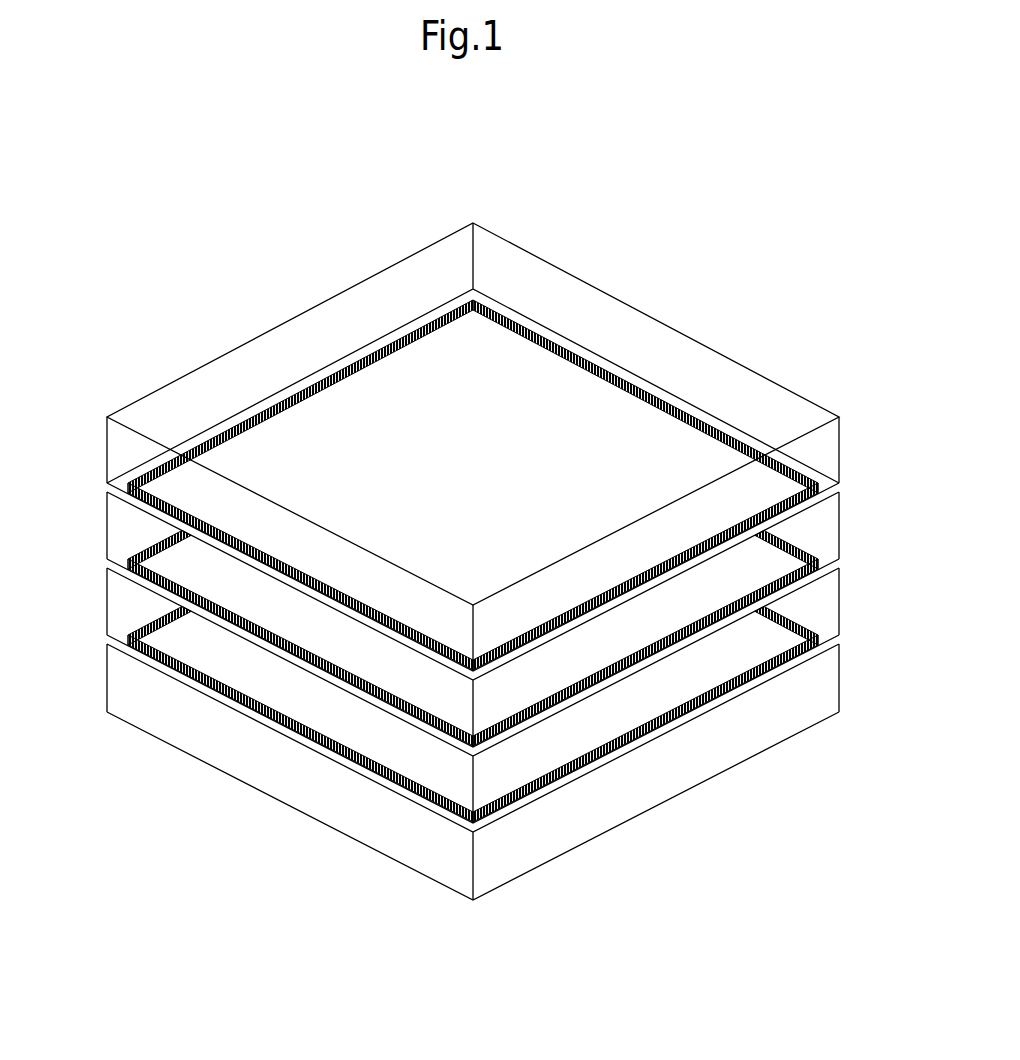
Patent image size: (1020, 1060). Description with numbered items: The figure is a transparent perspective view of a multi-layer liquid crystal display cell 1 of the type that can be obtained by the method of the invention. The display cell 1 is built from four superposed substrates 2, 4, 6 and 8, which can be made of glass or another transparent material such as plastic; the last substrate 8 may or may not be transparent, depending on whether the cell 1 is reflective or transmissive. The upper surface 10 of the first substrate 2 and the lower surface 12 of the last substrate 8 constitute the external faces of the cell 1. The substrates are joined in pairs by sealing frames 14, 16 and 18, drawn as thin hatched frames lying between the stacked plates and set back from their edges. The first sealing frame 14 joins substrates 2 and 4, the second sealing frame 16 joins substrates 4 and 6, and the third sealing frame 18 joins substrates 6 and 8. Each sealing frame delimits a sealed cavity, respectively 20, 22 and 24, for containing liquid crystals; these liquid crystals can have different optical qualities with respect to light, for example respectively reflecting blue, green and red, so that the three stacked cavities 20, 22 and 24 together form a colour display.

The display cell 1 is at (640, 245).
The first substrate 2 is at (504, 427).
The substrate 4 is at (504, 619).
The substrate 6 is at (504, 695).
The last substrate 8 is at (504, 772).
The upper surface 10 is at (423, 418).
The lower surface 12 is at (268, 808).
The first sealing frame 14 is at (127, 486).
The second sealing frame 16 is at (127, 562).
The third sealing frame 18 is at (127, 638).
The sealed cavity 20 is at (346, 494).
The sealed cavity 22 is at (327, 646).
The sealed cavity 24 is at (337, 723).